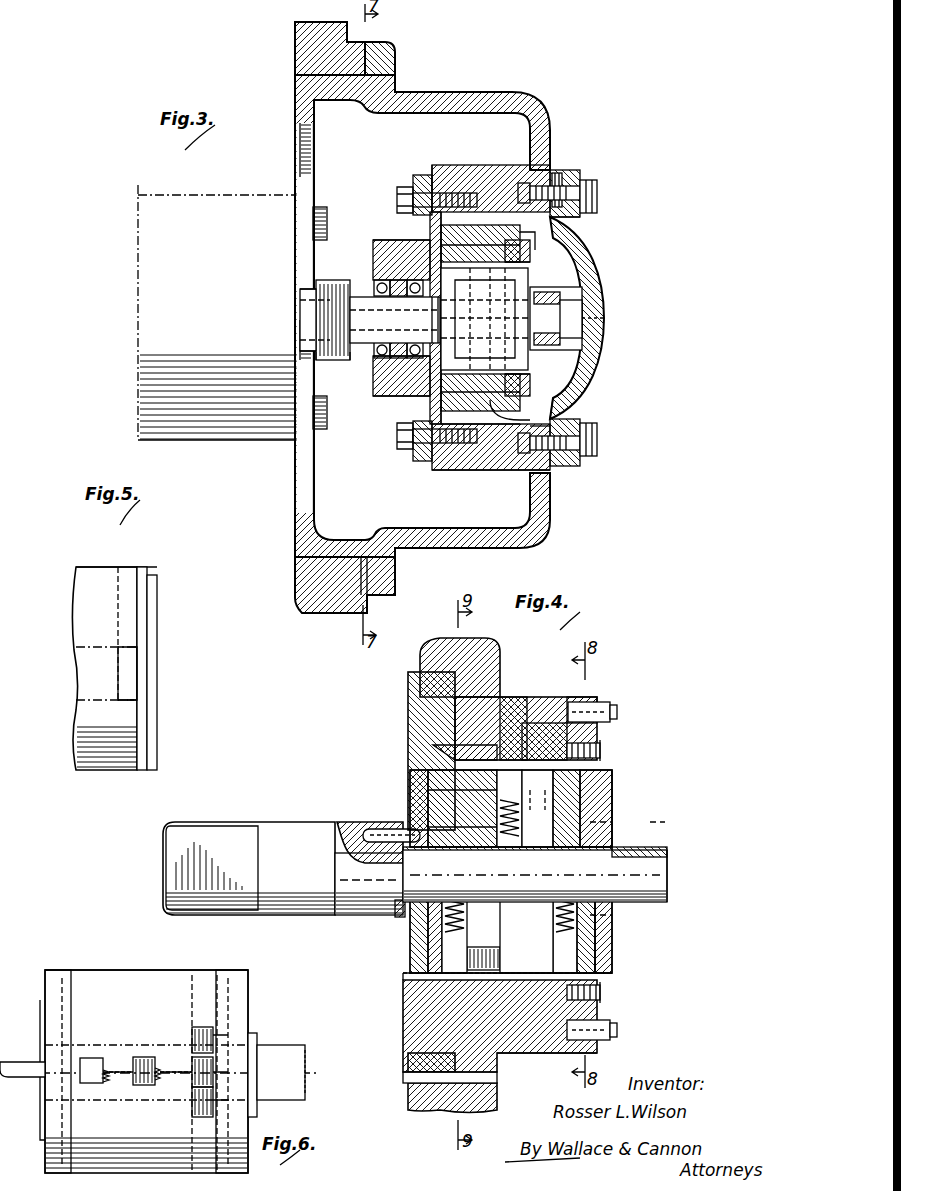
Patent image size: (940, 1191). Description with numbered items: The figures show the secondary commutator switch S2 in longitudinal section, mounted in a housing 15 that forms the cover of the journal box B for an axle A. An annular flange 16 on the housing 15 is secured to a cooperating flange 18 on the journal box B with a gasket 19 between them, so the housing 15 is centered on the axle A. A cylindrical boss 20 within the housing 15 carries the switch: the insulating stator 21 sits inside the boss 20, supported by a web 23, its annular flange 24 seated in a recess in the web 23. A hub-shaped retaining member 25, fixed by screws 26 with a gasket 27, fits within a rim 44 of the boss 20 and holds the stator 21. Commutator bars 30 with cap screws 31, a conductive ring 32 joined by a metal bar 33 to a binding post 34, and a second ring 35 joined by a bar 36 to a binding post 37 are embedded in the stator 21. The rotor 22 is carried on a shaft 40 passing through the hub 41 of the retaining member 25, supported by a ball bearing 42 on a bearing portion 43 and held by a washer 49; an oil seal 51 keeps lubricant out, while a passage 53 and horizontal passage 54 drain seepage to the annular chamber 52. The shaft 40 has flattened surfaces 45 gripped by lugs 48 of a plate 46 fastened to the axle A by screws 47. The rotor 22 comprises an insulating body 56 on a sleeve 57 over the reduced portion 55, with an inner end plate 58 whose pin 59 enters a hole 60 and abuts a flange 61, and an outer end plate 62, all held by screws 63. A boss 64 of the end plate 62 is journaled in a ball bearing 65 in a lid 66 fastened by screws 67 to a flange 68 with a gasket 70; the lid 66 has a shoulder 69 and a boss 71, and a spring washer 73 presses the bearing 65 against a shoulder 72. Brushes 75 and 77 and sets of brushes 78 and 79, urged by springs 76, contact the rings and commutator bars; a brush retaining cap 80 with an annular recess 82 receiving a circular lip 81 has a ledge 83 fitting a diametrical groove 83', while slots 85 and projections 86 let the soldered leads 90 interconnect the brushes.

In FIG. 3, the housing 15 is at (468, 104).
In FIG. 3, the annular flange 16 is at (396, 58).
In FIG. 3, the cooperating flange 18 is at (368, 44).
In FIG. 3, the gasket 19 is at (396, 84).
In FIG. 3, the cylindrical boss 20 is at (478, 176).
In FIG. 3, the stator 21 is at (510, 243).
In FIG. 4, the stator 21 is at (522, 695).
In FIG. 3, the rotor 22 is at (585, 282).
In FIG. 5, the rotor 22 is at (132, 561).
In FIG. 4, the rotor 22 is at (627, 782).
In FIG. 6, the rotor 22 is at (176, 965).
In FIG. 3, the web 23 is at (480, 242).
In FIG. 4, the web 23 is at (495, 662).
In FIG. 3, the annular flange 24 is at (420, 236).
In FIG. 4, the annular flange 24 is at (408, 690).
In FIG. 3, the retaining member 25 is at (420, 190).
In FIG. 4, the retaining member 25 is at (448, 1110).
In FIG. 3, the screws 26 is at (398, 198).
In FIG. 3, the gasket 27 is at (462, 172).
In FIG. 4, the commutator bars 30 is at (602, 748).
In FIG. 4, the cap screws 31 is at (603, 756).
In FIG. 4, the conductive ring 32 is at (505, 700).
In FIG. 4, the metal bar 33 is at (582, 700).
In FIG. 4, the binding post 34 is at (618, 710).
In FIG. 4, the conductive ring 35 is at (430, 722).
In FIG. 3, the bar 36 is at (492, 418).
In FIG. 4, the bar 36 is at (510, 1054).
In FIG. 4, the binding post 37 is at (606, 1038).
In FIG. 3, the shaft 40 is at (370, 300).
In FIG. 4, the shaft 40 is at (290, 832).
In FIG. 3, the hub 41 is at (392, 370).
In FIG. 3, the ball bearing 42 is at (398, 398).
In FIG. 3, the bearing portion 43 is at (405, 312).
In FIG. 4, the bearing portion 43 is at (348, 912).
In FIG. 3, the rim 44 is at (434, 172).
In FIG. 3, the flattened surfaces 45 is at (304, 318).
In FIG. 4, the flattened surfaces 45 is at (192, 846).
In FIG. 3, the plate 46 is at (306, 193).
In FIG. 3, the screws 47 is at (322, 212).
In FIG. 3, the lugs 48 is at (322, 352).
In FIG. 3, the washer 49 is at (376, 255).
In FIG. 3, the oil seal 51 is at (378, 355).
In FIG. 3, the annular chamber 52 is at (562, 420).
In FIG. 3, the passage 53 is at (435, 396).
In FIG. 4, the passage 53 is at (410, 1018).
In FIG. 3, the horizontal passage 54 is at (440, 468).
In FIG. 4, the reduced outer end portion 55 is at (652, 878).
In FIG. 5, the cylindrical body 56 is at (94, 580).
In FIG. 4, the cylindrical body 56 is at (436, 782).
In FIG. 6, the cylindrical body 56 is at (105, 985).
In FIG. 4, the insulating sleeve 57 is at (635, 940).
In FIG. 4, the end plate 58 is at (415, 790).
In FIG. 6, the end plate 58 is at (55, 975).
In FIG. 4, the pin 59 is at (372, 832).
In FIG. 6, the pin 59 is at (14, 1064).
In FIG. 4, the hole 60 is at (355, 826).
In FIG. 3, the annular flange 61 is at (434, 328).
In FIG. 4, the annular flange 61 is at (398, 917).
In FIG. 4, the end plate 62 is at (614, 785).
In FIG. 6, the end plate 62 is at (240, 995).
In FIG. 4, the screws 63 is at (614, 822).
In FIG. 4, the boss 64 is at (668, 858).
In FIG. 6, the boss 64 is at (306, 1053).
In FIG. 3, the ball bearing 65 is at (562, 300).
In FIG. 3, the lid 66 is at (598, 352).
In FIG. 3, the screws 67 is at (598, 192).
In FIG. 3, the annular flange 68 is at (557, 174).
In FIG. 3, the annular shoulder 69 is at (580, 218).
In FIG. 3, the gasket 70 is at (568, 178).
In FIG. 3, the boss 71 is at (584, 402).
In FIG. 4, the shoulder 72 is at (640, 852).
In FIG. 6, the shoulder 72 is at (258, 1042).
In FIG. 3, the spring washer 73 is at (582, 333).
In FIG. 4, the brush 75 is at (430, 960).
In FIG. 6, the brush 75 is at (100, 1058).
In FIG. 4, the spring 76 is at (385, 948).
In FIG. 4, the brush 77 is at (480, 800).
In FIG. 6, the brush 77 is at (146, 1057).
In FIG. 4, the brushes 78 is at (612, 950).
In FIG. 4, the brushes 79 is at (526, 871).
In FIG. 6, the brushes 79 is at (195, 1042).
In FIG. 5, the brush retaining cap 80 is at (150, 615).
In FIG. 4, the brush retaining cap 80 is at (612, 800).
In FIG. 6, the brush retaining cap 80 is at (226, 980).
In FIG. 4, the circular lip 81 is at (612, 975).
In FIG. 5, the annular recess 82 is at (156, 580).
In FIG. 5, the ledge 83 is at (161, 673).
In FIG. 6, the ledge 83 is at (215, 1050).
In FIG. 5, the diametrical groove 83' is at (162, 698).
In FIG. 4, the slots 85 is at (545, 715).
In FIG. 6, the slots 85 is at (118, 1082).
In FIG. 6, the projections 86 is at (205, 1040).
In FIG. 4, the leads 90 is at (518, 850).
In FIG. 6, the leads 90 is at (108, 1042).
In FIG. 3, the axle A is at (228, 205).
In FIG. 3, the journal box B is at (296, 60).
In FIG. 3, the secondary switch S2 is at (568, 128).
In FIG. 4, the secondary switch S2 is at (384, 758).